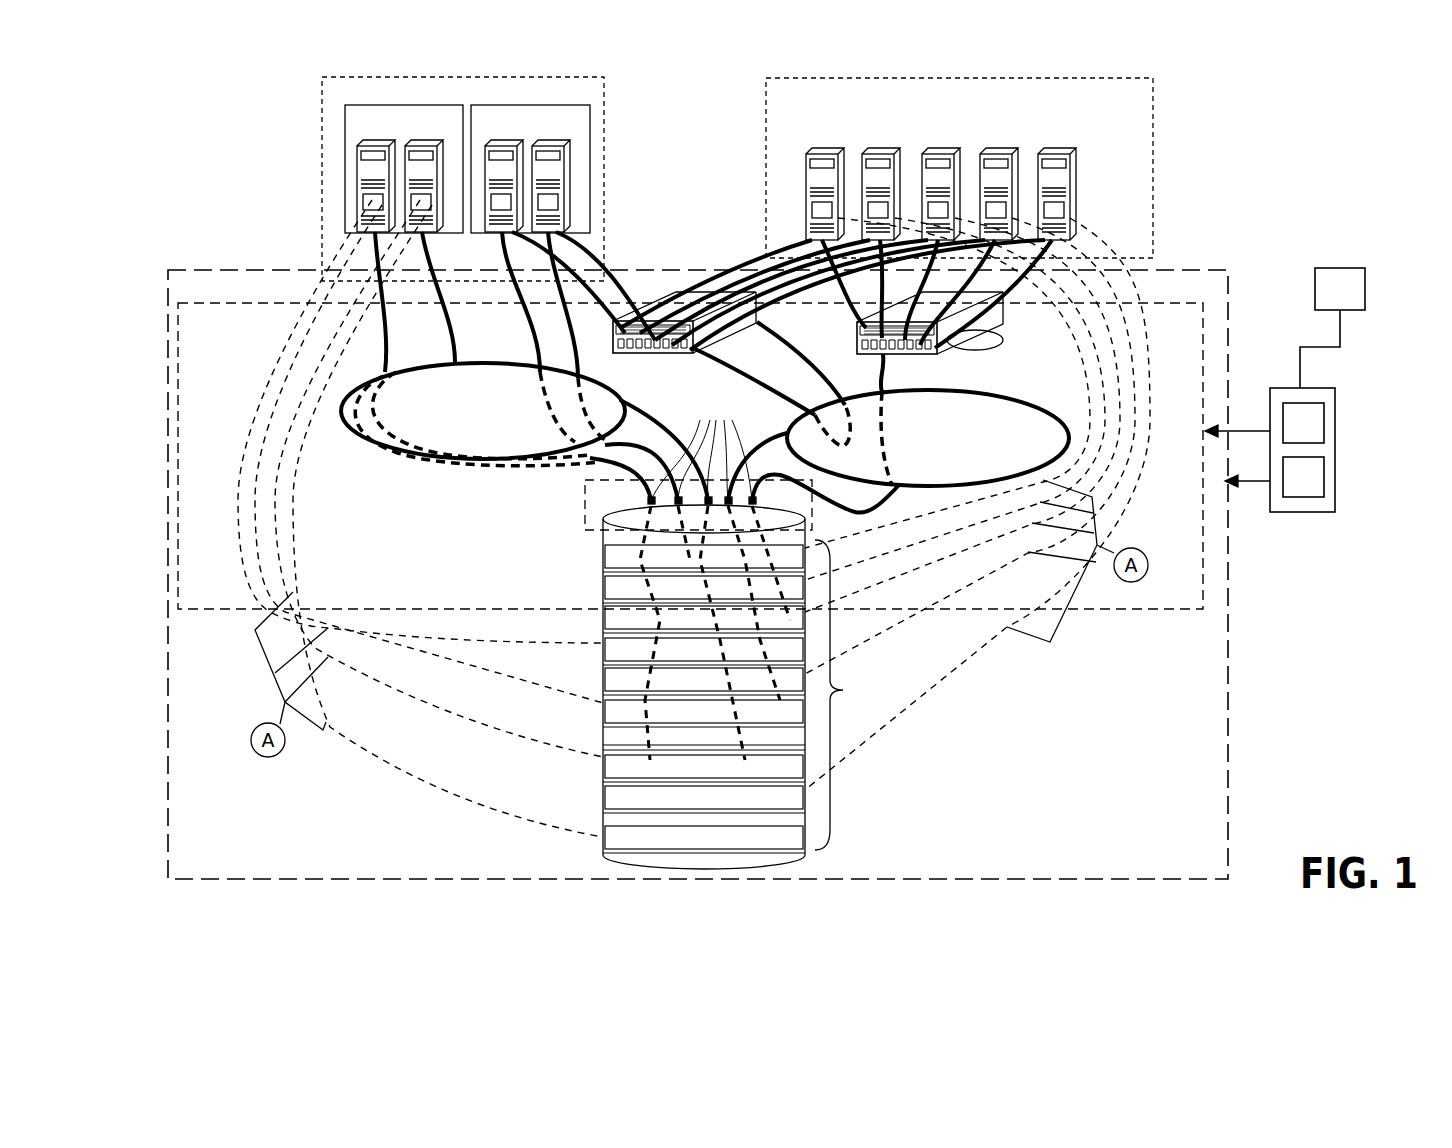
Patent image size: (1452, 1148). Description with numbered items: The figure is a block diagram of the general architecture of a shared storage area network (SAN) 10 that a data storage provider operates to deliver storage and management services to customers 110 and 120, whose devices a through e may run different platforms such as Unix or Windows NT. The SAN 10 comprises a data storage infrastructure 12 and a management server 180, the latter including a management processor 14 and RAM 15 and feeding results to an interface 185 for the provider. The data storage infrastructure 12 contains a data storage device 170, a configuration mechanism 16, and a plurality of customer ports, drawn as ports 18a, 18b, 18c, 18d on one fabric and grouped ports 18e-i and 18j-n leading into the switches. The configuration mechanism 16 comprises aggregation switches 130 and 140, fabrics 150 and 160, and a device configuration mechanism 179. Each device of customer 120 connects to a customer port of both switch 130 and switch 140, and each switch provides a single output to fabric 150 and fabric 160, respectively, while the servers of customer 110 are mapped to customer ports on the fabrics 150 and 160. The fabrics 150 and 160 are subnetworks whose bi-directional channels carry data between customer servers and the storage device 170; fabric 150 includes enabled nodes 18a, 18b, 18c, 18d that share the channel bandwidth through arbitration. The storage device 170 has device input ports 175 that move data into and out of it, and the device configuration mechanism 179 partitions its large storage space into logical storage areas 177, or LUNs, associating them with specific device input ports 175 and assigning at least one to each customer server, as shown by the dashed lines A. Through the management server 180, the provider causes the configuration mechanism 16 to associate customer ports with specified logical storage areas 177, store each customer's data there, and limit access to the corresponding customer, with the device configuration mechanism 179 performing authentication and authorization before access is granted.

The shared storage area network 10 is at (842, 919).
The data storage infrastructure 12 is at (222, 880).
The management processor 14 is at (1324, 480).
The RAM 15 is at (1324, 425).
The configuration mechanism 16 is at (228, 303).
The customer port 18a is at (388, 363).
The customer port 18b is at (455, 356).
The customer port 18c is at (540, 346).
The customer port 18d is at (578, 348).
The customer ports 18e-i is at (612, 330).
The customer ports 18j-n is at (958, 338).
The customer 110 is at (604, 110).
The customer 120 is at (1153, 113).
The aggregation switch 130 is at (692, 352).
The aggregation switch 140 is at (857, 345).
The fabric 150 is at (410, 457).
The fabric 160 is at (1033, 402).
The data storage device 170 is at (749, 687).
The device input ports 175 is at (701, 447).
The logical storage areas 177 is at (603, 836).
The device configuration mechanism 179 is at (585, 507).
The management server 180 is at (1335, 510).
The interface 185 is at (1365, 305).